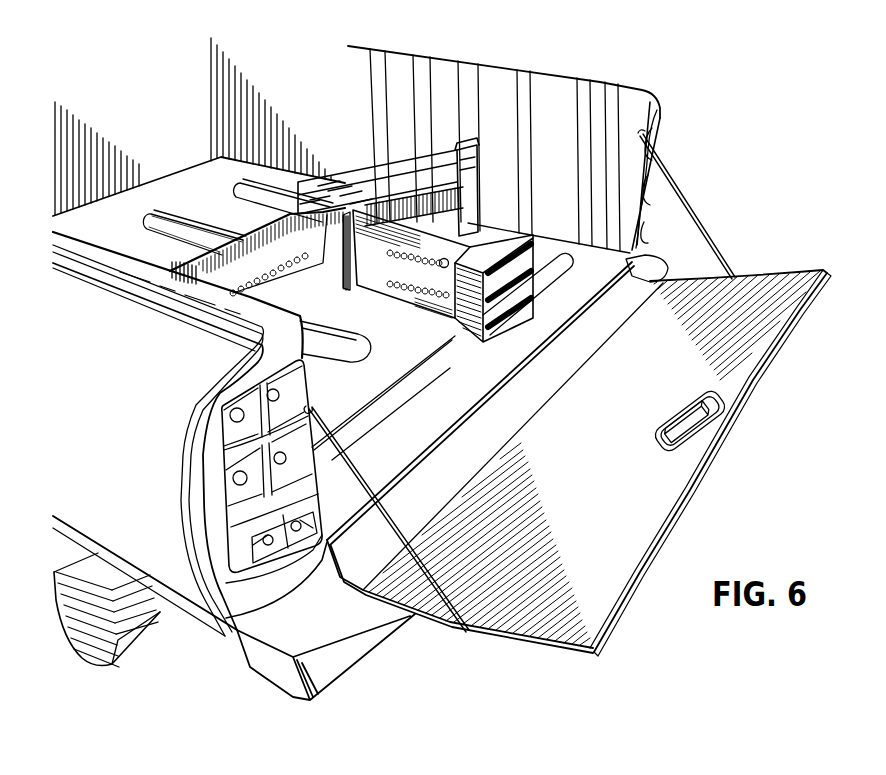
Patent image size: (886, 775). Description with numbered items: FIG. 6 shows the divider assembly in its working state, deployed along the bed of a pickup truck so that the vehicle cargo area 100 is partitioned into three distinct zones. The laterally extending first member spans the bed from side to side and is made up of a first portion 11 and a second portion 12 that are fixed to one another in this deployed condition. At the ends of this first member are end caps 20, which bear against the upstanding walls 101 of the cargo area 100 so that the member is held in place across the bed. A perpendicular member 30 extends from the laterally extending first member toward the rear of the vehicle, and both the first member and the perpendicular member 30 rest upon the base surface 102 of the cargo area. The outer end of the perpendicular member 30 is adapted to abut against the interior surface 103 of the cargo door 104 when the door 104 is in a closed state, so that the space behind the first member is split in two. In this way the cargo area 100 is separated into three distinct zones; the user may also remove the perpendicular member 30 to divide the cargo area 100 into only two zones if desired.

The vehicle cargo area 100 is at (676, 78).
The upstanding walls 101 is at (569, 186).
The base surface 102 is at (419, 346).
The interior surface 103 is at (632, 442).
The cargo door 104 is at (762, 449).
The first portion 11 is at (222, 211).
The second portion 12 is at (361, 169).
The end caps 20 is at (475, 147).
The perpendicular member 30 is at (468, 352).